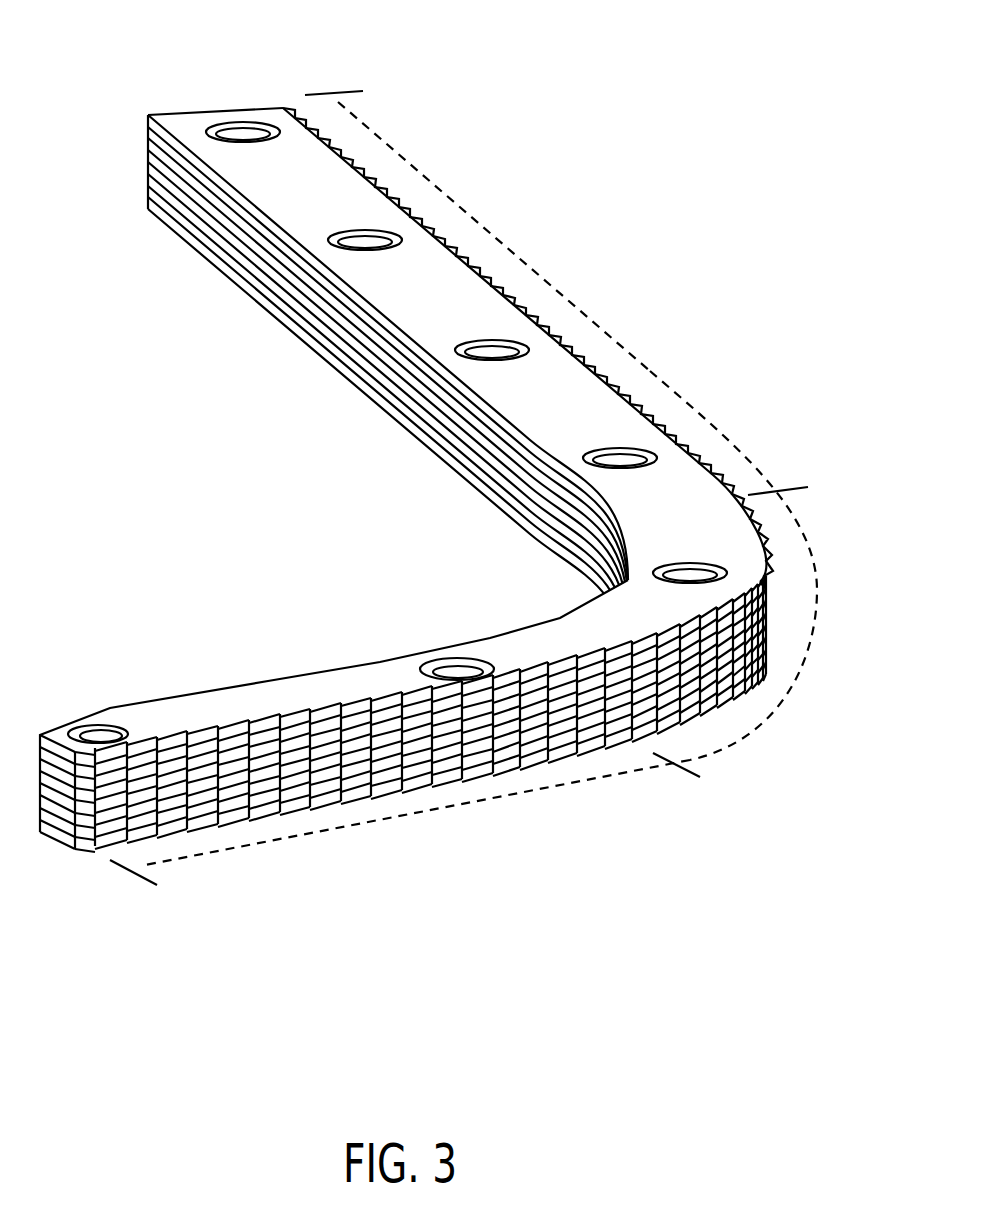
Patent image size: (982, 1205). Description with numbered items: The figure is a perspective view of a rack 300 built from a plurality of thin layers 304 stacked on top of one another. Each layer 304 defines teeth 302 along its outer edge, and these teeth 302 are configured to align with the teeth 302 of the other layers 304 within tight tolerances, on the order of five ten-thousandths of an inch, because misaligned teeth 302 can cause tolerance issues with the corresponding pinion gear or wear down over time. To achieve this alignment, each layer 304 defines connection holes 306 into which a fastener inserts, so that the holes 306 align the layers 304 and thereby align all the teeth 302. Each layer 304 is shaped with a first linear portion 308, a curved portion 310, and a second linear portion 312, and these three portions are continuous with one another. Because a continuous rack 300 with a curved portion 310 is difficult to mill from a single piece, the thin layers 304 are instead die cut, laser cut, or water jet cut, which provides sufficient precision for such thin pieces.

The rack 300 is at (173, 122).
The teeth 302 is at (383, 188).
The layers 304 is at (148, 182).
The connection holes 306 is at (240, 132).
The first linear portion 308 is at (547, 283).
The curved portion 310 is at (815, 633).
The second linear portion 312 is at (388, 821).